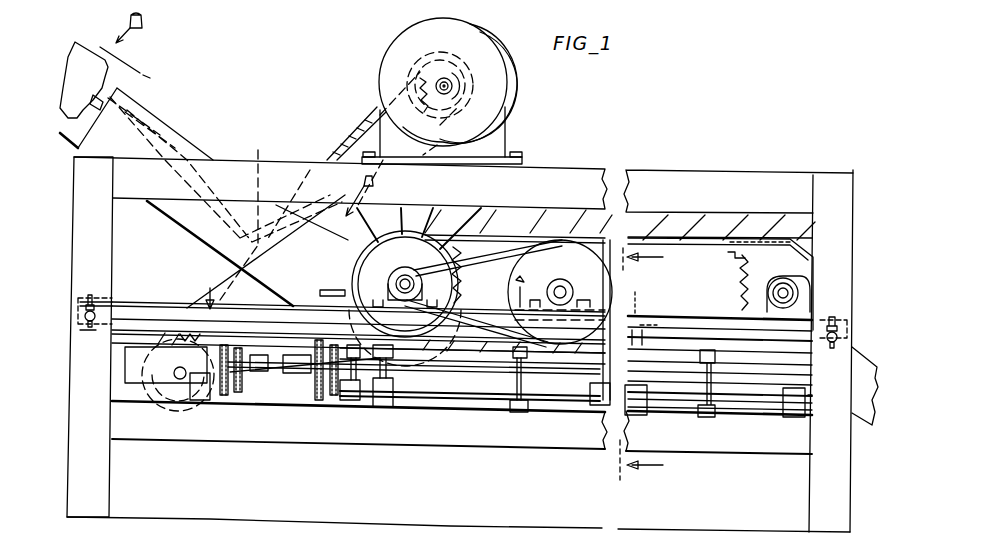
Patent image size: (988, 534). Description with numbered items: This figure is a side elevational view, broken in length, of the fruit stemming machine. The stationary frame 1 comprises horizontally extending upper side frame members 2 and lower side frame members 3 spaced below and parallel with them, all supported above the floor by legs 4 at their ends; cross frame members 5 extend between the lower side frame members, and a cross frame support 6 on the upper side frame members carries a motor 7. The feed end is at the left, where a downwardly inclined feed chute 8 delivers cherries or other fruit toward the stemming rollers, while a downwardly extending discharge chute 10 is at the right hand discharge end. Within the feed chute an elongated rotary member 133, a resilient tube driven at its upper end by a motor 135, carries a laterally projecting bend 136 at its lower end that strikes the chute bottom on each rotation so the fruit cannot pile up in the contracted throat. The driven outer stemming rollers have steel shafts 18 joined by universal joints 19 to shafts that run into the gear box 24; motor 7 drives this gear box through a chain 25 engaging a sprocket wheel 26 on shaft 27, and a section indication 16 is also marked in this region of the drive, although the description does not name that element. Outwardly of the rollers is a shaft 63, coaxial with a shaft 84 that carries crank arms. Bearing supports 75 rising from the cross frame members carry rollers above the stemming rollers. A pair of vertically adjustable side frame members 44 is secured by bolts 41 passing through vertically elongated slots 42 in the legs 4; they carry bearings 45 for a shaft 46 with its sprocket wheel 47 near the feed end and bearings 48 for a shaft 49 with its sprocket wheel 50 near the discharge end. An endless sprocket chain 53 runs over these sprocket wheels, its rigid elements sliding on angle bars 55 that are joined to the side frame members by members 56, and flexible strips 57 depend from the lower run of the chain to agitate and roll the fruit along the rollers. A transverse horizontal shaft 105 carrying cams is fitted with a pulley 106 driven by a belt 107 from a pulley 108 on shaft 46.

The stationary frame 1 is at (738, 162).
The upper side frame members 2 is at (683, 177).
The lower side frame members 3 is at (712, 455).
The legs 4 is at (94, 464).
The cross frame members 5 is at (650, 363).
The cross frame support 6 is at (505, 152).
The motor 7 is at (502, 84).
The feed chute 8 is at (175, 218).
The discharge chute 10 is at (862, 362).
The sprockets 16 is at (222, 347).
The steel shafts 18 is at (277, 366).
The universal joints 19 is at (260, 365).
The gear box 24 is at (140, 345).
The chain 25 is at (345, 153).
The sprocket wheel 26 is at (180, 347).
The shaft 27 is at (185, 398).
The bolts 41 is at (90, 324).
The vertically elongated slots 42 is at (106, 293).
The vertically adjustable side frame members 44 is at (660, 317).
The bearings 45 is at (403, 307).
The shaft 46 is at (406, 276).
The sprocket wheel 47 is at (420, 235).
The bearings 48 is at (737, 288).
The shaft 49 is at (786, 290).
The sprocket wheel 50 is at (740, 266).
The endless sprocket chain 53 is at (735, 235).
The angle bars 55 is at (710, 350).
The members 56 is at (638, 306).
The flexible strips 57 is at (688, 352).
The shaft 63 is at (300, 384).
The bearing supports 75 is at (400, 408).
The shaft 84 is at (558, 399).
The horizontal shaft 105 is at (560, 282).
The pulley 106 is at (585, 280).
The belt 107 is at (500, 235).
The pulley 108 is at (470, 292).
The elongated rotary member 133 is at (186, 130).
The motor 135 is at (108, 68).
The laterally projecting bend 136 is at (251, 215).